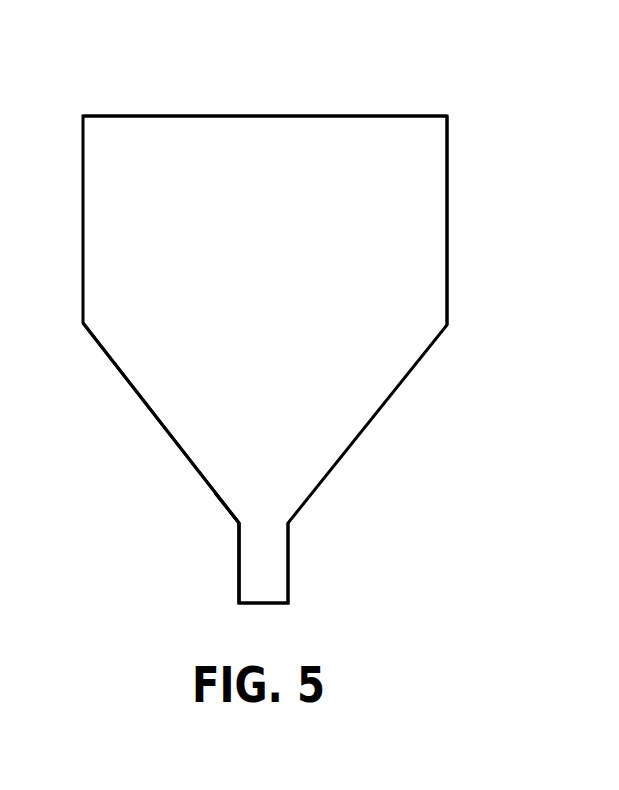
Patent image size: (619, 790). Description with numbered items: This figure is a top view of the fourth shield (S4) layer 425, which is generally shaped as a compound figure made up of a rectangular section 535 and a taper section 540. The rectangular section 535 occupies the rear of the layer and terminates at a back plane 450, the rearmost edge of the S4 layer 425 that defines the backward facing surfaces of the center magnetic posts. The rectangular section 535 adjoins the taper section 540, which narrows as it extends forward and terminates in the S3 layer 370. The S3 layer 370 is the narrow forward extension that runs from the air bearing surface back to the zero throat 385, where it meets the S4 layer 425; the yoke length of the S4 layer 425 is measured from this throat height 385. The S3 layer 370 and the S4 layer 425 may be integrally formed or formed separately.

The back plane 450 is at (280, 116).
The rectangular section 535 is at (447, 220).
The taper section 540 is at (148, 412).
The fourth shield (S4) layer 425 is at (293, 276).
The zero throat 385 is at (233, 527).
The S3 layer 370 is at (296, 572).